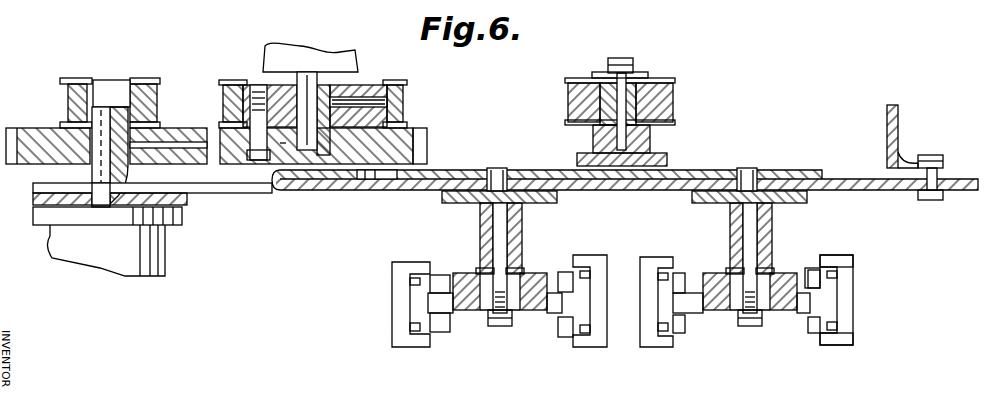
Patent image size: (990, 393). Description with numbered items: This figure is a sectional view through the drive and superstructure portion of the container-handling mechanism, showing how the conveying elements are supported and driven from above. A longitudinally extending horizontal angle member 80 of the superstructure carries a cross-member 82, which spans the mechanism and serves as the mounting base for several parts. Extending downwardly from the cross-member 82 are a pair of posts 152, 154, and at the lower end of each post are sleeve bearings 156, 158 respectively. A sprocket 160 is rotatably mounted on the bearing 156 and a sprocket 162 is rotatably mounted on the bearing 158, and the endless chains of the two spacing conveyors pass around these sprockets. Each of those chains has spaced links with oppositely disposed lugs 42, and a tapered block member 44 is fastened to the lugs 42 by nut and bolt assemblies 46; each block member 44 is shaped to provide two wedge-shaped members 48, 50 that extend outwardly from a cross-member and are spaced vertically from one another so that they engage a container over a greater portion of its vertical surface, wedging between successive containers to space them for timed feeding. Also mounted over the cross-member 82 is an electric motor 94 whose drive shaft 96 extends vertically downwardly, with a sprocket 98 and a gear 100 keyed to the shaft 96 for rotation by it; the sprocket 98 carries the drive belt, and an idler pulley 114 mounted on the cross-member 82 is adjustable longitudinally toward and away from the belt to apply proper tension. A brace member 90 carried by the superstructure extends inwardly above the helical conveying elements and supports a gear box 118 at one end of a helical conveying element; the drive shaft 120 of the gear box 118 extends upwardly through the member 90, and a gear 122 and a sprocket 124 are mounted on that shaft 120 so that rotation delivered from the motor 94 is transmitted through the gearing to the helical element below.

The lugs 42 is at (568, 270).
The tapered block member 44 is at (411, 259).
The nut and bolt assemblies 46 is at (817, 270).
The wedge-shaped member 48 is at (852, 258).
The wedge-shaped member 50 is at (853, 335).
The horizontal angle members 80 is at (898, 123).
The cross-member 82 is at (845, 178).
The brace member 90 is at (183, 200).
The electric motor 94 is at (358, 53).
The drive shaft 96 is at (283, 143).
The sprocket 98 is at (372, 80).
The gear 100 is at (427, 140).
The idler pulley 114 is at (665, 76).
The gear box 118 is at (167, 242).
The drive shaft 120 is at (106, 105).
The gear 122 is at (28, 127).
The sprocket 124 is at (136, 80).
The post 152 is at (523, 220).
The post 154 is at (768, 216).
The sleeve bearing 156 is at (478, 318).
The sleeve bearing 158 is at (768, 313).
The sprocket 160 is at (462, 272).
The sprocket 162 is at (710, 310).